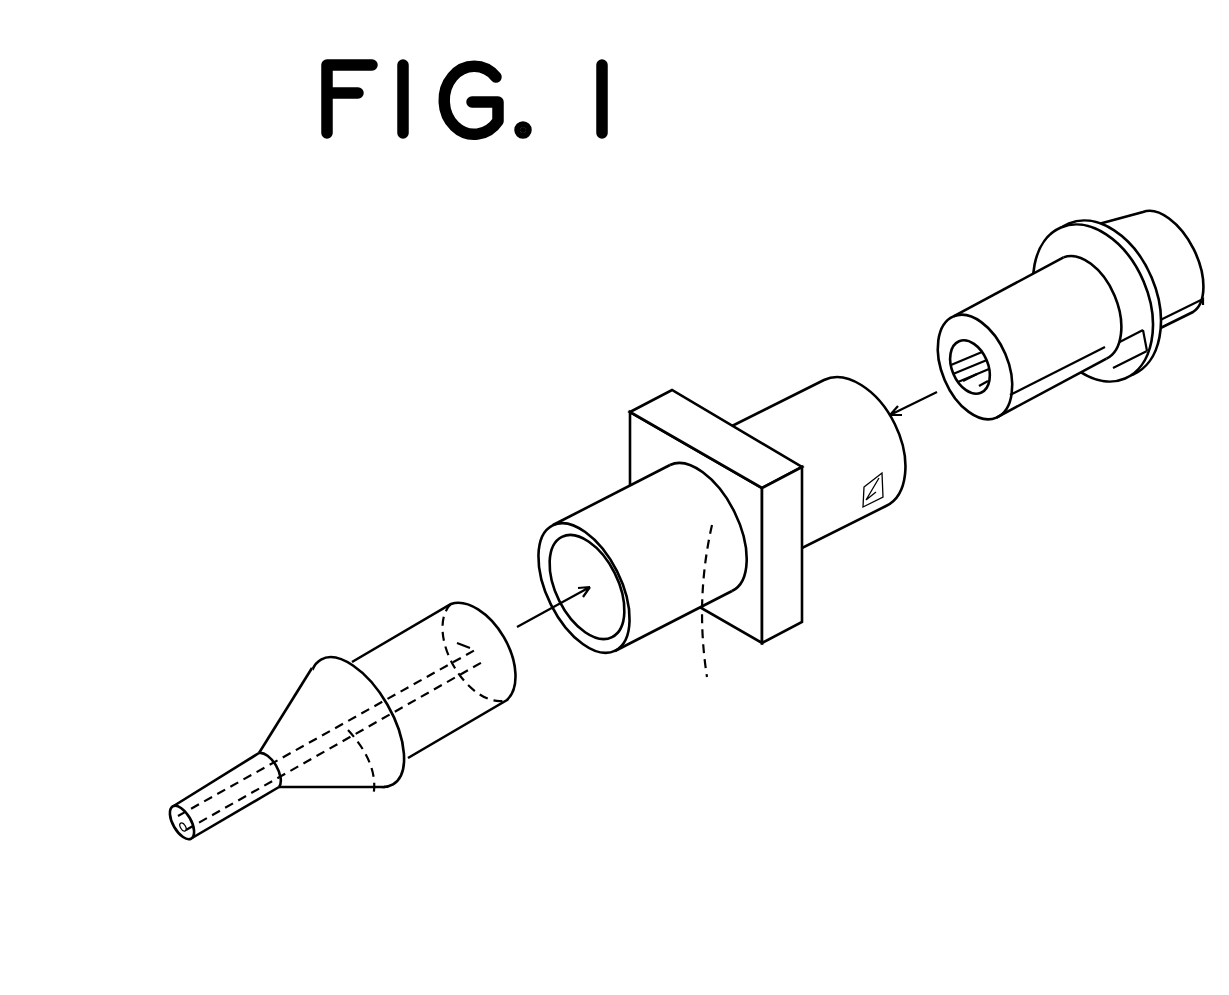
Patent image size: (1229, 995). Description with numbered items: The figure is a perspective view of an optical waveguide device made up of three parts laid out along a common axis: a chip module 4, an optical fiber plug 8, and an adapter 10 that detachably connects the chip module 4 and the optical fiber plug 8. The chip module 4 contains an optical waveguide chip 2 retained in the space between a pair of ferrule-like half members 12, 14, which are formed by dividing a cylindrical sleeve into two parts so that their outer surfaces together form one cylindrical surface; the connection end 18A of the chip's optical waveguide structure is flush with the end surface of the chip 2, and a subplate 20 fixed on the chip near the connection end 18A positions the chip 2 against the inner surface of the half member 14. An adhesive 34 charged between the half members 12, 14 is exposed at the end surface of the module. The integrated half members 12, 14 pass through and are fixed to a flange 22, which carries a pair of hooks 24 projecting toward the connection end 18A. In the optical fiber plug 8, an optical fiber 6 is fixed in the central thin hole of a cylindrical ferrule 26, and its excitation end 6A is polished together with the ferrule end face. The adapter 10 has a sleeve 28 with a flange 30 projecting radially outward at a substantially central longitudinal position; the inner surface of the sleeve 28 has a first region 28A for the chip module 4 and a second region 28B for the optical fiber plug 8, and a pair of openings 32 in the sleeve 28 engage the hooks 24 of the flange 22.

The optical waveguide chip 2 is at (987, 393).
The chip module 4 is at (1035, 320).
The optical fiber 6 is at (373, 797).
The end surface (excitation end) of the optical fiber 6A is at (457, 643).
The optical fiber plug 8 is at (367, 687).
The adapter 10 is at (686, 480).
The half member 12 is at (1060, 385).
The half member 14 is at (982, 330).
The connection end of the optical waveguide structure 18A is at (971, 387).
The subplate 20 is at (934, 345).
The flange 22 is at (1078, 222).
The hook 24 is at (1130, 353).
The ferrule 26 is at (440, 728).
The sleeve (receptacle) 28 is at (588, 554).
The first region 28A is at (721, 628).
The second region 28B is at (553, 560).
The flange 30 is at (787, 617).
The opening 32 is at (878, 512).
The adhesive 34 is at (961, 340).